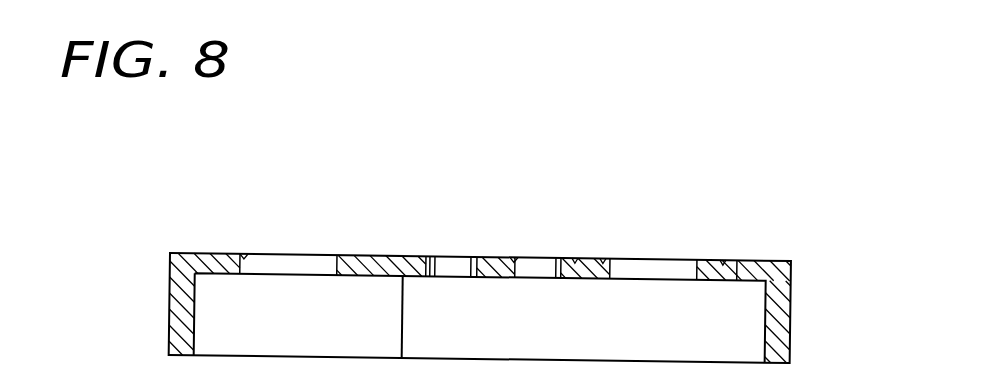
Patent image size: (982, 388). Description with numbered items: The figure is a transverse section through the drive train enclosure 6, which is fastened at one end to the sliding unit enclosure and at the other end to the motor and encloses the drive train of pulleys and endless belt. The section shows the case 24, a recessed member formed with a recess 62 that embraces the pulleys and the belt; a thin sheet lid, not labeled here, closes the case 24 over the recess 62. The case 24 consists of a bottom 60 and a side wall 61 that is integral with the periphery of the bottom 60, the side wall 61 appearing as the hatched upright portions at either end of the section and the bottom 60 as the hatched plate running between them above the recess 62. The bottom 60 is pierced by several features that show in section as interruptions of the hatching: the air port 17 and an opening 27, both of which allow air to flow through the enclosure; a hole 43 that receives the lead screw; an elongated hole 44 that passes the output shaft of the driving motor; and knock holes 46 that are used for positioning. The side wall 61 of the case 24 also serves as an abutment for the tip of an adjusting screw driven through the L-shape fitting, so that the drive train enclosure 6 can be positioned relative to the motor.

The drive train enclosure 6 is at (790, 324).
The air port 17 is at (440, 256).
The case 24 is at (766, 260).
The opening 27 is at (520, 257).
The hole 43 is at (612, 258).
The elongated hole 44 is at (245, 255).
The knock hole 46 is at (575, 258).
The bottom 60 is at (385, 256).
The side wall 61 is at (183, 307).
The recess 62 is at (612, 336).